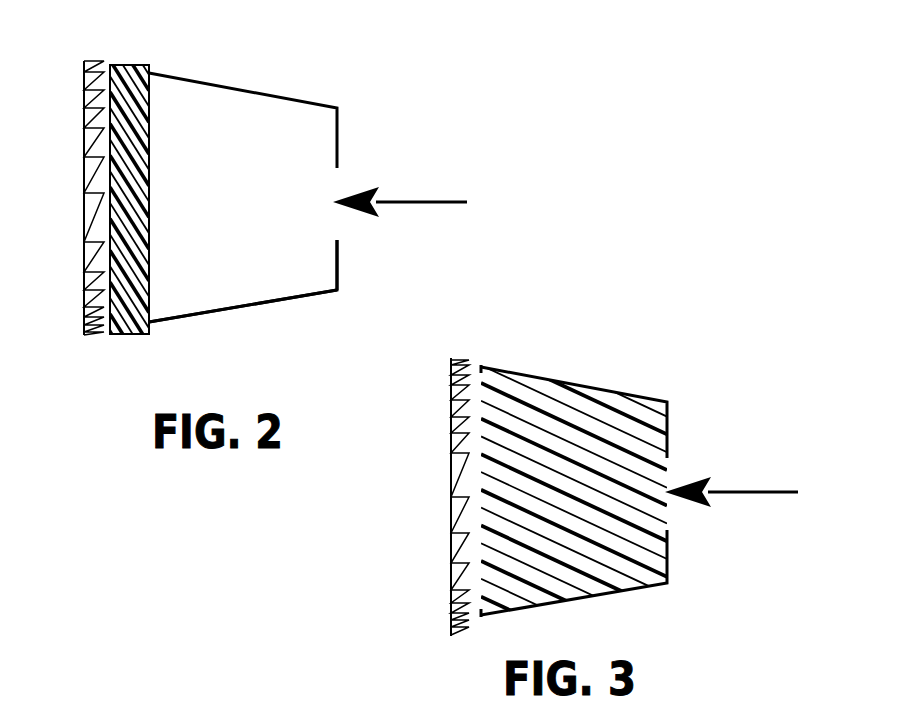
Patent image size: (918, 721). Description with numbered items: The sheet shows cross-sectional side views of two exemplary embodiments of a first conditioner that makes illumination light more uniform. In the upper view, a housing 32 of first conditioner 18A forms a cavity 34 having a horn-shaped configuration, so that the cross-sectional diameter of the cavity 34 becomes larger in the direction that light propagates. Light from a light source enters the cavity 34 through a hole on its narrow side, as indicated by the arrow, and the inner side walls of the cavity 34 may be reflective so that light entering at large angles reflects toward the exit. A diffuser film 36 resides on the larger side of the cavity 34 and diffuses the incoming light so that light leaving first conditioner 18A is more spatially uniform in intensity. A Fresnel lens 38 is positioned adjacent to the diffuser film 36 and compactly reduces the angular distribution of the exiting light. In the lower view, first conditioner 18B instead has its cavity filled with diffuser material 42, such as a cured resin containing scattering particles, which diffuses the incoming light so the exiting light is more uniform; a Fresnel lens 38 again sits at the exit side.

In FIG. 2, the first conditioner 18A is at (277, 62).
In FIG. 3, the first conditioner 18B is at (634, 354).
In FIG. 2, the housing 32 is at (190, 321).
In FIG. 2, the cavity 34 is at (259, 267).
In FIG. 2, the diffuser film 36 is at (128, 65).
In FIG. 2, the Fresnel lens 38 is at (92, 338).
In FIG. 3, the Fresnel lens 38 is at (456, 632).
In FIG. 3, the diffuser material 42 is at (572, 425).